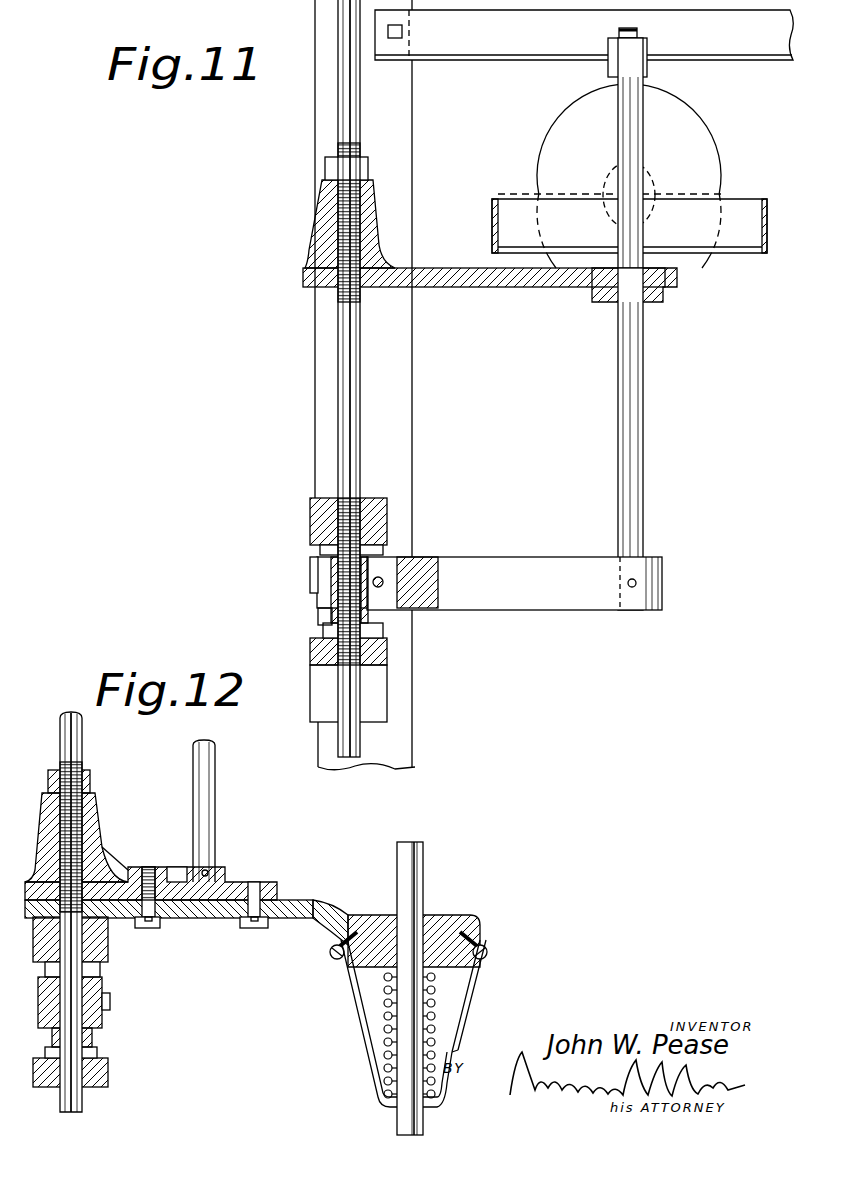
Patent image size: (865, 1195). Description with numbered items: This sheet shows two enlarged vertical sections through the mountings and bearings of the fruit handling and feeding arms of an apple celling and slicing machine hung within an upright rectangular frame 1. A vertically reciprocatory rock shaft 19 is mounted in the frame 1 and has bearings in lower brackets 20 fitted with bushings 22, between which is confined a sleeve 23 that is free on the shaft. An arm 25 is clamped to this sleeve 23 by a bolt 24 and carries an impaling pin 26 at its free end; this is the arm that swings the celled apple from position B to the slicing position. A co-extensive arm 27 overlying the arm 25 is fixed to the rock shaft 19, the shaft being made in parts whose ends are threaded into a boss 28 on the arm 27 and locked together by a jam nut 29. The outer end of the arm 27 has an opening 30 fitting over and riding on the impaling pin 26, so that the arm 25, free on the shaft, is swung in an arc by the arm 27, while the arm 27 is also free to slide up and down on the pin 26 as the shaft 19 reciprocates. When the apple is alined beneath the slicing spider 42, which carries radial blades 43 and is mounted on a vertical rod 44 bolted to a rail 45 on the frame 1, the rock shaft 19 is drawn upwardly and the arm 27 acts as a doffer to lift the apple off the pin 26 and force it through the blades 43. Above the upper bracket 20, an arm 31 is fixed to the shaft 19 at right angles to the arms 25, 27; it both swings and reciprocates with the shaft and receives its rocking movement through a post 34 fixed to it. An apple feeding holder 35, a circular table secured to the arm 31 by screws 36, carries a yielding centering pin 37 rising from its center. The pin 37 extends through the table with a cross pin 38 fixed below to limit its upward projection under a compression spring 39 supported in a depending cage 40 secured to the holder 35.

In FIG. 11, the frame 1 is at (410, 707).
In FIG. 11, the rock shaft 19 is at (350, 132).
In FIG. 12, the rock shaft 19 is at (78, 750).
In FIG. 11, the lower brackets 20 is at (380, 518).
In FIG. 12, the lower brackets 20 is at (108, 957).
In FIG. 11, the bushings 22 is at (390, 547).
In FIG. 12, the bushings 22 is at (97, 970).
In FIG. 11, the sleeve 23 is at (333, 590).
In FIG. 12, the sleeve 23 is at (95, 1037).
In FIG. 11, the bolt 24 is at (383, 582).
In FIG. 12, the bolt 24 is at (110, 1010).
In FIG. 11, the arm 25 is at (593, 603).
In FIG. 12, the arm 25 is at (102, 1025).
In FIG. 11, the impaling pin 26 is at (640, 392).
In FIG. 11, the arm 27 is at (525, 280).
In FIG. 12, the arm 27 is at (186, 922).
In FIG. 11, the boss 28 is at (372, 217).
In FIG. 12, the boss 28 is at (97, 818).
In FIG. 11, the jam nut 29 is at (370, 168).
In FIG. 12, the jam nut 29 is at (90, 784).
In FIG. 11, the opening 30 is at (630, 282).
In FIG. 12, the arm 31 is at (238, 880).
In FIG. 12, the post 34 is at (217, 818).
In FIG. 12, the apple feeding holder 35 is at (367, 920).
In FIG. 12, the screws 36 is at (247, 927).
In FIG. 12, the centering pin 37 is at (423, 885).
In FIG. 12, the cross pin 38 is at (440, 973).
In FIG. 12, the compression spring 39 is at (380, 995).
In FIG. 12, the cage 40 is at (362, 1035).
In FIG. 11, the slicing spider 42 is at (767, 227).
In FIG. 11, the radial blades 43 is at (625, 227).
In FIG. 11, the vertical rod 44 is at (642, 108).
In FIG. 11, the rail 45 is at (722, 46).
In FIG. 11, the position B is at (717, 163).